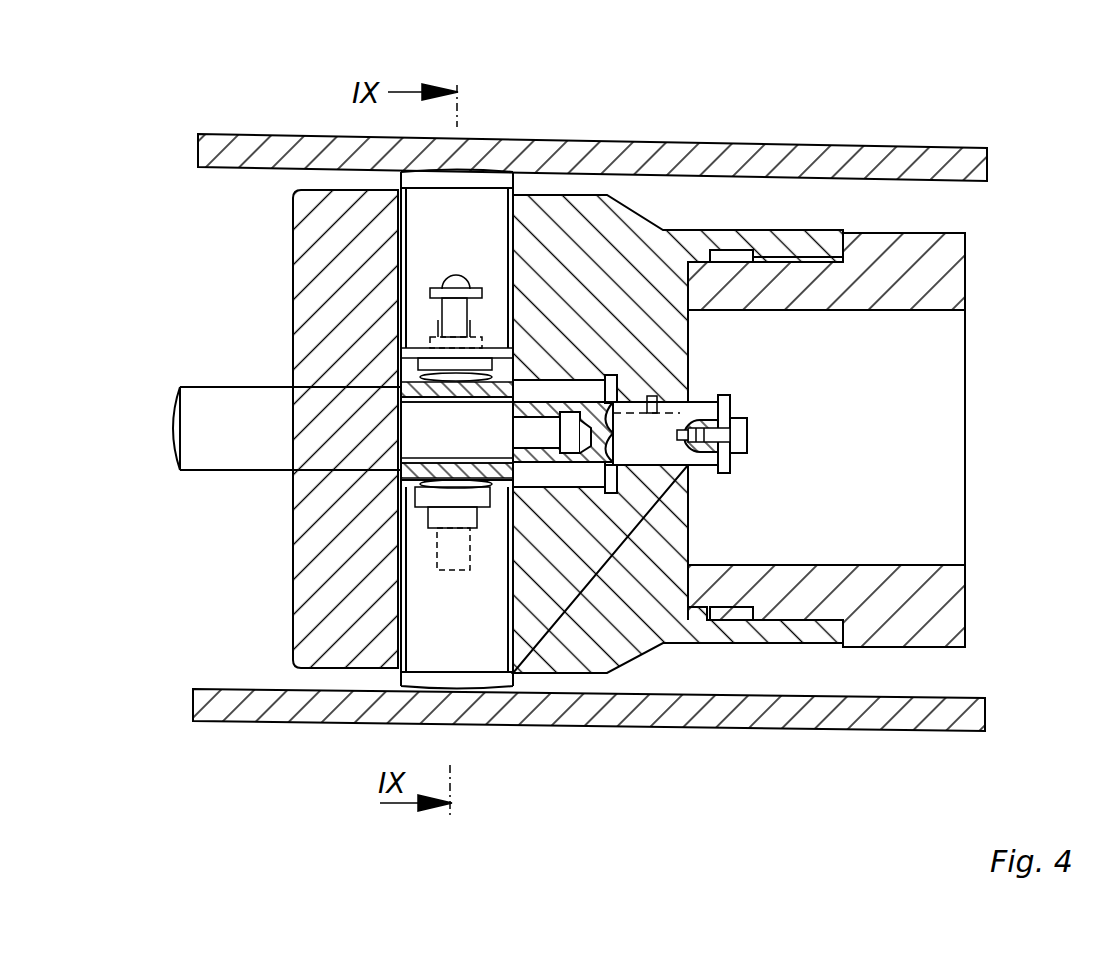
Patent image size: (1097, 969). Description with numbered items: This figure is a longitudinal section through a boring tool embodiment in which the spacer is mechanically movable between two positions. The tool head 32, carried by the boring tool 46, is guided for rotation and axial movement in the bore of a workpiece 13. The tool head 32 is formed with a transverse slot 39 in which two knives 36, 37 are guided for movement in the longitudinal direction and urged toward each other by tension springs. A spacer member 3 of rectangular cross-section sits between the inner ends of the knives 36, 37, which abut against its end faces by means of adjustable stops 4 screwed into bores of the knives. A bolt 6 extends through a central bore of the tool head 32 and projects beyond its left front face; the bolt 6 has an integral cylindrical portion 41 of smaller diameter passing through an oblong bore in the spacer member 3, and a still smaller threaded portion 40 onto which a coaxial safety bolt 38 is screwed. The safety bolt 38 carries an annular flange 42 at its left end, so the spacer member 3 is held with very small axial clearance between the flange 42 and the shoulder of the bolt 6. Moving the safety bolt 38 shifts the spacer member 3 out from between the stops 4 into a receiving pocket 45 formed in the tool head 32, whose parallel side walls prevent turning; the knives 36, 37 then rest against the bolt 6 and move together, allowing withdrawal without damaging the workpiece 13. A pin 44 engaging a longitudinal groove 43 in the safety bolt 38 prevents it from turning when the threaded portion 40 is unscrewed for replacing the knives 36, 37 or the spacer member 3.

The spacer member 3 is at (477, 430).
The adjustable stops 4 is at (457, 497).
The bolt 6 is at (213, 432).
The workpiece 13 is at (778, 165).
The tool head 32 is at (580, 297).
The knife 36 is at (465, 238).
The knife 37 is at (435, 612).
The safety bolt 38 is at (662, 450).
The transverse slot 39 is at (395, 613).
The threaded portion 40 is at (540, 435).
The cylindrical portion 41 is at (483, 430).
The annular flange 42 is at (515, 397).
The longitudinal groove 43 is at (715, 420).
The pin 44 is at (680, 410).
The receiving pocket 45 is at (580, 473).
The boring tool 46 is at (912, 285).